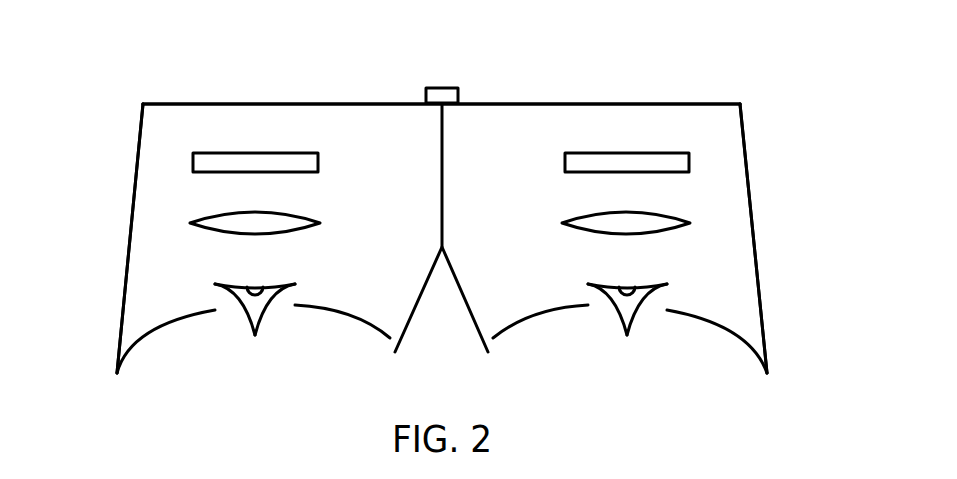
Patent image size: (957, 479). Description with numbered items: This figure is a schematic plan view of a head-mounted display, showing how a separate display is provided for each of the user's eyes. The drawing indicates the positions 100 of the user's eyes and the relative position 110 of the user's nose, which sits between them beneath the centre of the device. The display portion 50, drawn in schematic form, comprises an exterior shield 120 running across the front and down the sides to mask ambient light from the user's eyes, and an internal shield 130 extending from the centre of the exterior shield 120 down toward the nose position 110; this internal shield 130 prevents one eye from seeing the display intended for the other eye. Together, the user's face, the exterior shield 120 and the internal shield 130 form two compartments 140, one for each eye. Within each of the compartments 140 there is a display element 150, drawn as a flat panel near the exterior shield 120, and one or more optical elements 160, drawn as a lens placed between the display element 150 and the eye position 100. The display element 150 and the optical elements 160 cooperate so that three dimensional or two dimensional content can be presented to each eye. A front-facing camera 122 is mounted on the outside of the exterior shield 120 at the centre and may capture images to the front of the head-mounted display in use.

The display portion 50 is at (727, 102).
The positions of the user's eyes 100 is at (262, 318).
The relative position of the user's nose 110 is at (467, 295).
The exterior shield 120 is at (522, 102).
The front-facing camera 122 is at (440, 87).
The internal shield 130 is at (443, 177).
The compartments 140 is at (305, 125).
The display element 150 is at (213, 162).
The optical elements 160 is at (190, 223).